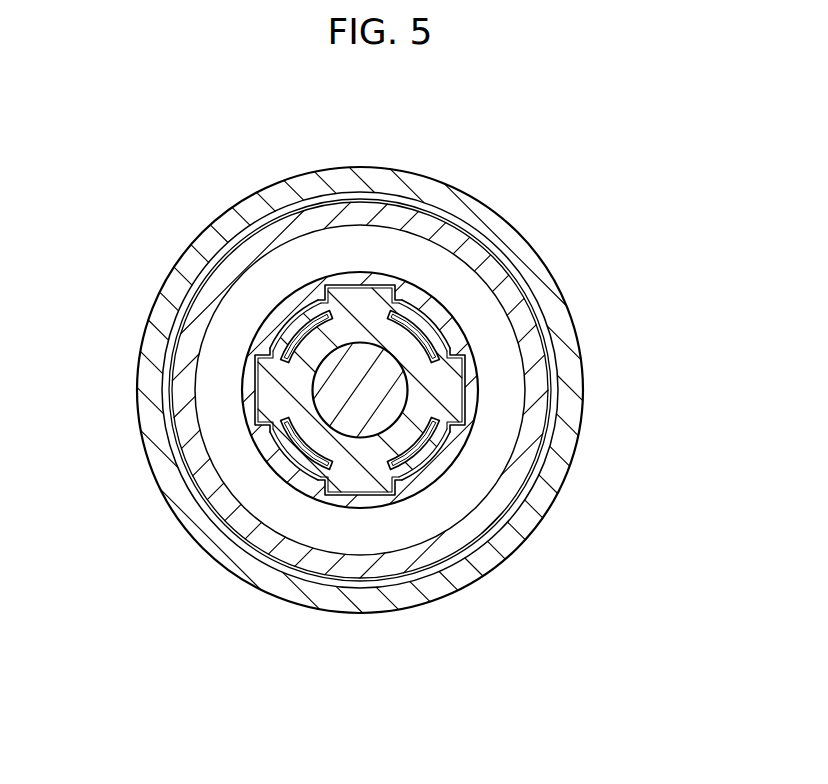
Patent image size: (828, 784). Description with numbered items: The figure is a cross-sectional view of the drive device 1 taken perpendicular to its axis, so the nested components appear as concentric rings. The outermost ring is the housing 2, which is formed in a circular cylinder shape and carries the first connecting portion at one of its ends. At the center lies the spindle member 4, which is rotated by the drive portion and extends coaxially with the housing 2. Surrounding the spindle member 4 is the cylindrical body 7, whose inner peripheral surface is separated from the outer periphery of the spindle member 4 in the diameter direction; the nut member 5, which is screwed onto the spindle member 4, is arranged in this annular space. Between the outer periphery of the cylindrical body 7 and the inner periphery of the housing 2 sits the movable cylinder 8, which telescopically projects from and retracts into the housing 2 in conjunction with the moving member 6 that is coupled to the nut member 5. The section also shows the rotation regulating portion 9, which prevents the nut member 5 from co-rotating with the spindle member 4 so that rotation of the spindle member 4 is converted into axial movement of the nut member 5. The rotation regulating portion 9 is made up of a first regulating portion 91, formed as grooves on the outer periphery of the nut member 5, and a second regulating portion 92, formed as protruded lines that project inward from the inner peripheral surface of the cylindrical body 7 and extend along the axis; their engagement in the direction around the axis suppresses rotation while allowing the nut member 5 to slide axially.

The drive device 1 is at (635, 147).
The housing 2 is at (148, 365).
The spindle member 4 is at (358, 403).
The nut member 5 is at (290, 385).
The moving member 6 is at (420, 332).
The cylindrical body 7 is at (383, 272).
The movable cylinder 8 is at (533, 372).
The rotation regulating portion 9 is at (297, 290).
The first regulating portion 91 is at (320, 300).
The second regulating portion 92 is at (292, 325).